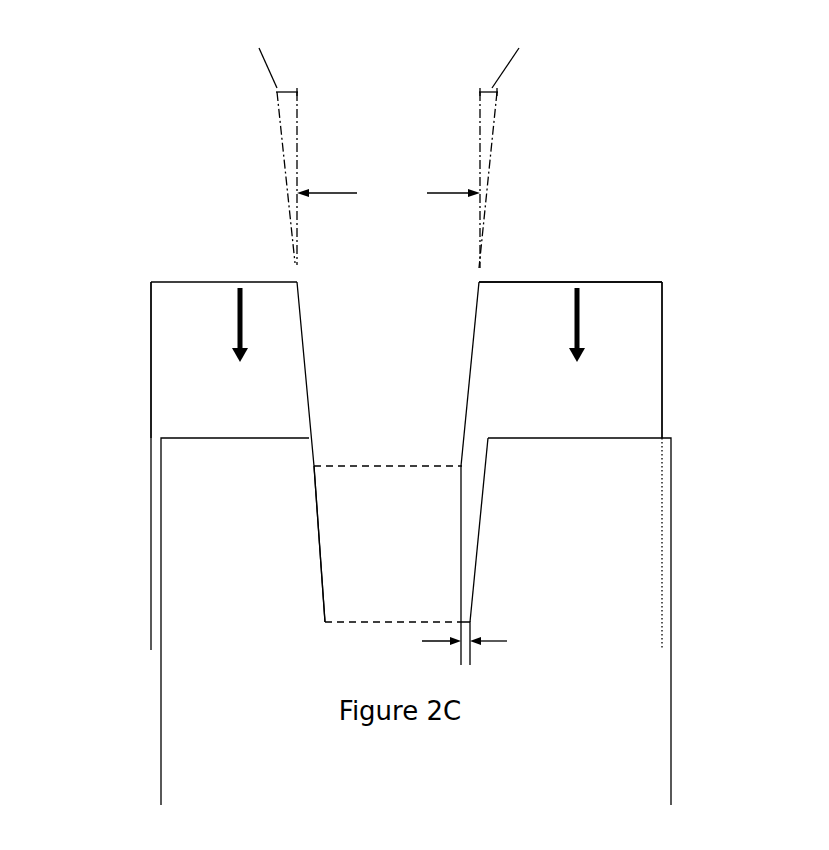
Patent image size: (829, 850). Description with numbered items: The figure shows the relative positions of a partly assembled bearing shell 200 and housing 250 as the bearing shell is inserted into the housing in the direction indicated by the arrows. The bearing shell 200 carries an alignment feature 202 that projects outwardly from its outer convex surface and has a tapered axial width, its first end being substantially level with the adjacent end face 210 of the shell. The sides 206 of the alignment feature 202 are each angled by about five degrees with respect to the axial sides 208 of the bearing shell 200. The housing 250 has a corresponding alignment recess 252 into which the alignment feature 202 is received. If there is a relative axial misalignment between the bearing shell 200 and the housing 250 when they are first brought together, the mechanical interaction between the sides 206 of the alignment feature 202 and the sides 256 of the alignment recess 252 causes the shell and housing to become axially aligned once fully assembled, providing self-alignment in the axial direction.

The bearing shell 200 is at (118, 116).
The alignment feature 202 is at (366, 354).
The sides 206 is at (297, 320).
The axial sides 208 is at (150, 347).
The end face 210 is at (610, 282).
The housing 250 is at (186, 419).
The alignment recess 252 is at (496, 517).
The sides 256 is at (313, 543).